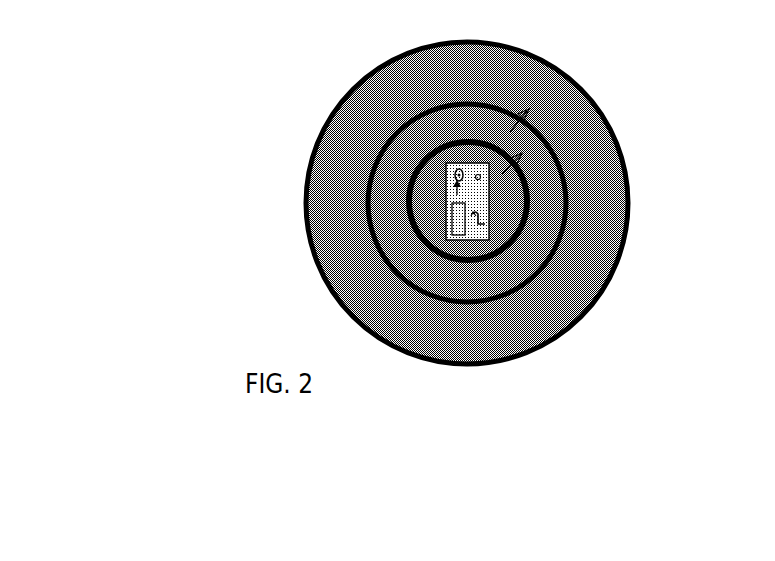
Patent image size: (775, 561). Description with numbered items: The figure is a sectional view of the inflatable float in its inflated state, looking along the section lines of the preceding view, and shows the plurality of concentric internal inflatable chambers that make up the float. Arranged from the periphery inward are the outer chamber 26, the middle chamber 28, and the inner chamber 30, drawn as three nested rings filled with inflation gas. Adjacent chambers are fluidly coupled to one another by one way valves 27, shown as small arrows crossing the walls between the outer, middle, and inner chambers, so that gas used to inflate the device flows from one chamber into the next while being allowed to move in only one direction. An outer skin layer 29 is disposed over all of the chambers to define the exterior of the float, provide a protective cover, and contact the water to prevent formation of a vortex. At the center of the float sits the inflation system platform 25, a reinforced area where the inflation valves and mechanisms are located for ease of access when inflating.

The inflation system platform 25 is at (490, 204).
The outer chamber 26 is at (355, 148).
The one way valves 27 is at (522, 119).
The middle chamber 28 is at (387, 196).
The outer skin layer 29 is at (613, 292).
The inner chamber 30 is at (433, 220).